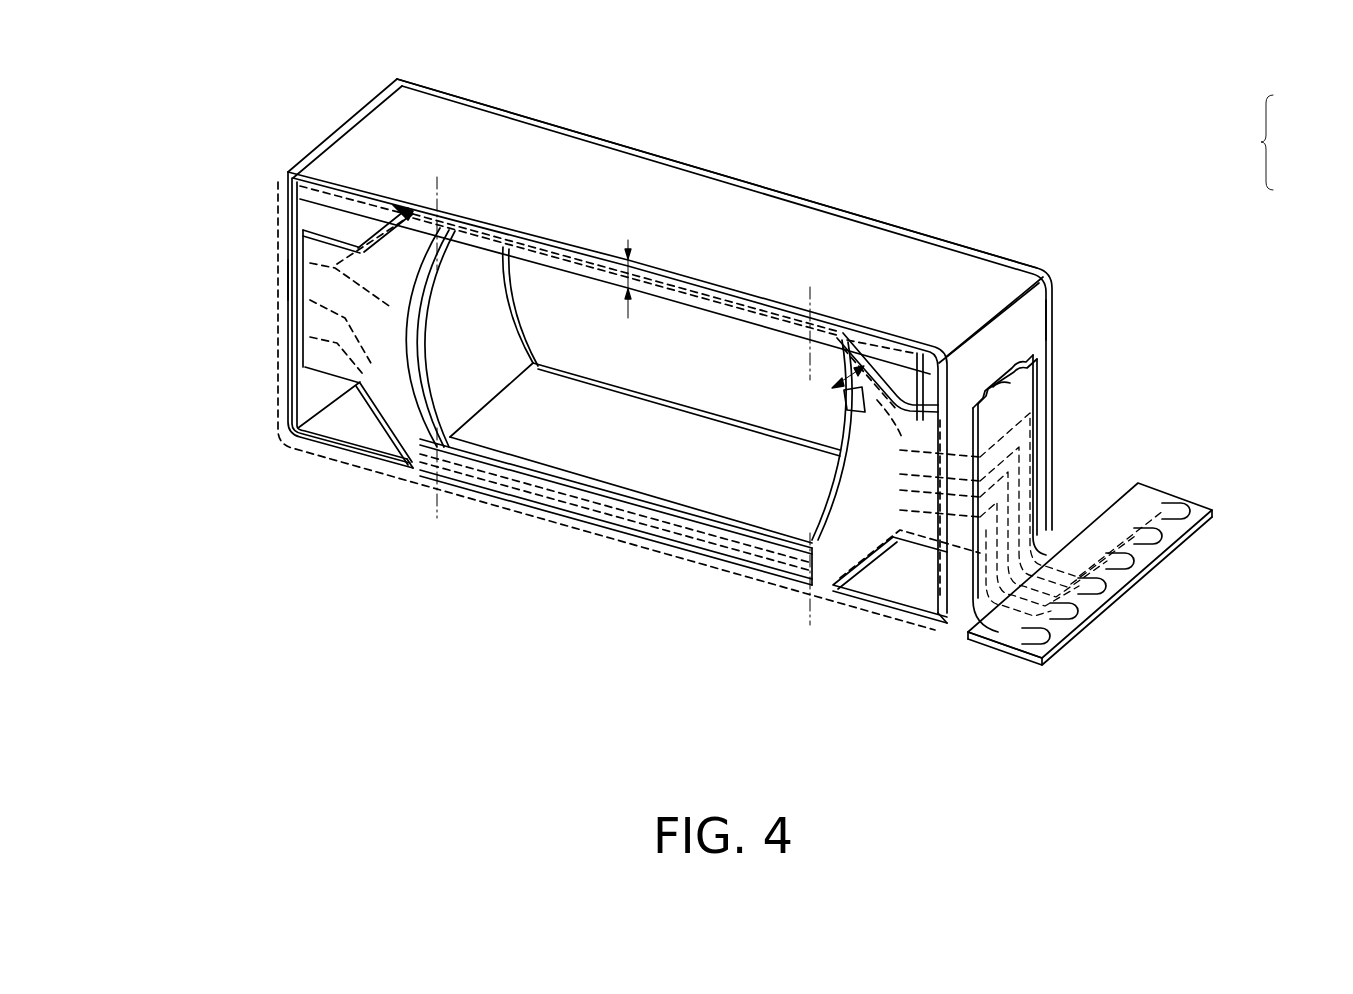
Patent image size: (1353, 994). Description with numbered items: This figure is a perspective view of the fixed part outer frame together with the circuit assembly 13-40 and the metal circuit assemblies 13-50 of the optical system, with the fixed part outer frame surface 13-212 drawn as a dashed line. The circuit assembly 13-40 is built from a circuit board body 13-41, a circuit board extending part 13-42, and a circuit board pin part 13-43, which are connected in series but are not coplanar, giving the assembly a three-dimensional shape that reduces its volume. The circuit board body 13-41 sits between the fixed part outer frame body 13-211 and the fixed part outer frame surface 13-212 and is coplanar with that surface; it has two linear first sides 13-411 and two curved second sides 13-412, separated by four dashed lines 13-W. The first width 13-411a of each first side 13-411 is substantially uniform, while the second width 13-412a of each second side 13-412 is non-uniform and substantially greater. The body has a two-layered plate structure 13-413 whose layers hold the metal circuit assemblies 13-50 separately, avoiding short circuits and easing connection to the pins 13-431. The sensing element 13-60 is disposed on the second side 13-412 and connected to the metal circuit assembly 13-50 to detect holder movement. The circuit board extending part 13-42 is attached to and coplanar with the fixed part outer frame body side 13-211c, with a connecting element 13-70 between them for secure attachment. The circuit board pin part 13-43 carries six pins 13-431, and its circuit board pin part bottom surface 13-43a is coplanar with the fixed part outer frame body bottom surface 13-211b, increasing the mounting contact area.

The circuit assembly 13-40 is at (1263, 142).
The circuit board body 13-41 is at (370, 272).
The first side 13-411 is at (570, 262).
The first width 13-411a is at (675, 263).
The second side 13-412 is at (393, 377).
The second width 13-412a is at (850, 372).
The two-layered plate structure 13-413 is at (323, 233).
The circuit board extending part 13-42 is at (1035, 447).
The circuit board pin part 13-43 is at (1155, 498).
The pins 13-431 is at (1050, 636).
The circuit board pin part bottom surface 13-43a is at (1000, 656).
The fixed part outer frame body 13-211 is at (925, 250).
The fixed part outer frame body bottom surface 13-211b is at (957, 622).
The fixed part outer frame body side 13-211c is at (1040, 320).
The fixed part outer frame surface 13-212 is at (278, 275).
The metal circuit assembly 13-50 is at (300, 368).
The sensing element 13-60 is at (812, 540).
The connecting element 13-70 is at (1012, 380).
The dashed lines 13-W is at (615, 401).